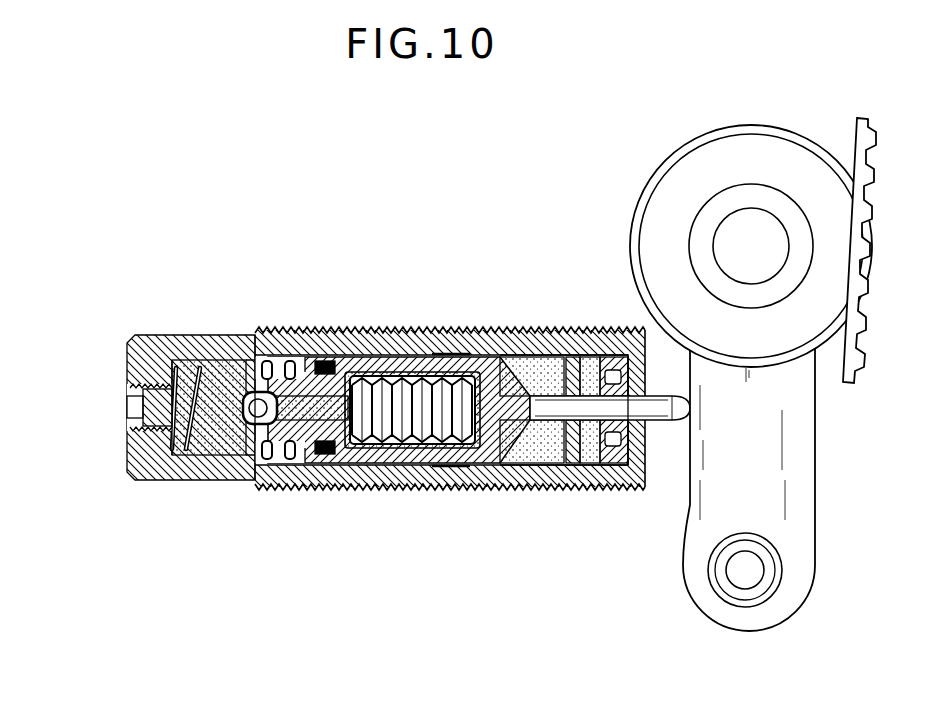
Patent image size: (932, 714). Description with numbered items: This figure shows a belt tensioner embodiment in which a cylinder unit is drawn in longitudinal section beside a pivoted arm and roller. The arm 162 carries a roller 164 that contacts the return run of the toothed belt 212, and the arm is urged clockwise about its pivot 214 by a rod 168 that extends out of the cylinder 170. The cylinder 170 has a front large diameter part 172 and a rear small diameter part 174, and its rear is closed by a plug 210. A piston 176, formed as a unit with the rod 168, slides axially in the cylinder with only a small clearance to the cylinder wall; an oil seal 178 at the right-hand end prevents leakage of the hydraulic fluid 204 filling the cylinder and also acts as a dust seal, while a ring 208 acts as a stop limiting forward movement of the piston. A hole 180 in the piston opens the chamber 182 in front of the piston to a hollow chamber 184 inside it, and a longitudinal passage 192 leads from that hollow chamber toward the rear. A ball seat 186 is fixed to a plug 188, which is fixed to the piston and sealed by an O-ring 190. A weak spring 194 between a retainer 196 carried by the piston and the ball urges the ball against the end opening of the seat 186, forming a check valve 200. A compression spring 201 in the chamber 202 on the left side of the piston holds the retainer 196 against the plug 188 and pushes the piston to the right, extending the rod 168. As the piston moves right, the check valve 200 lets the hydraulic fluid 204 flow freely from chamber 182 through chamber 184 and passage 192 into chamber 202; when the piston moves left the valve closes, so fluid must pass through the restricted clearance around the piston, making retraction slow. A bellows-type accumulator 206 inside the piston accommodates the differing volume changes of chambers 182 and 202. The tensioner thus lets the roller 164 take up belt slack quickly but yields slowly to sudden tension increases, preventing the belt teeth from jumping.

The arm 162 is at (800, 468).
The roller 164 is at (702, 163).
The rod 168 is at (550, 403).
The cylinder 170 is at (442, 331).
The front large diameter part 172 is at (533, 333).
The rear small diameter part 174 is at (207, 337).
The piston 176 is at (407, 337).
The oil seal 178 is at (614, 358).
The hole 180 is at (500, 360).
The chamber 182 is at (512, 465).
The hollow chamber 184 is at (490, 460).
The ball seat 186 is at (318, 360).
The plug 188 is at (357, 330).
The O-ring 190 is at (338, 357).
The longitudinal passage 192 is at (292, 417).
The weak spring 194 is at (233, 362).
The retainer 196 is at (256, 362).
The check valve 200 is at (245, 420).
The compression spring 201 is at (177, 337).
The chamber 202 is at (196, 448).
The hydraulic fluid 204 is at (572, 358).
The bellows-type accumulator 206 is at (360, 460).
The ring 208 is at (568, 475).
The plug 210 is at (118, 384).
The belt 212 is at (853, 140).
The pivot 214 is at (778, 575).